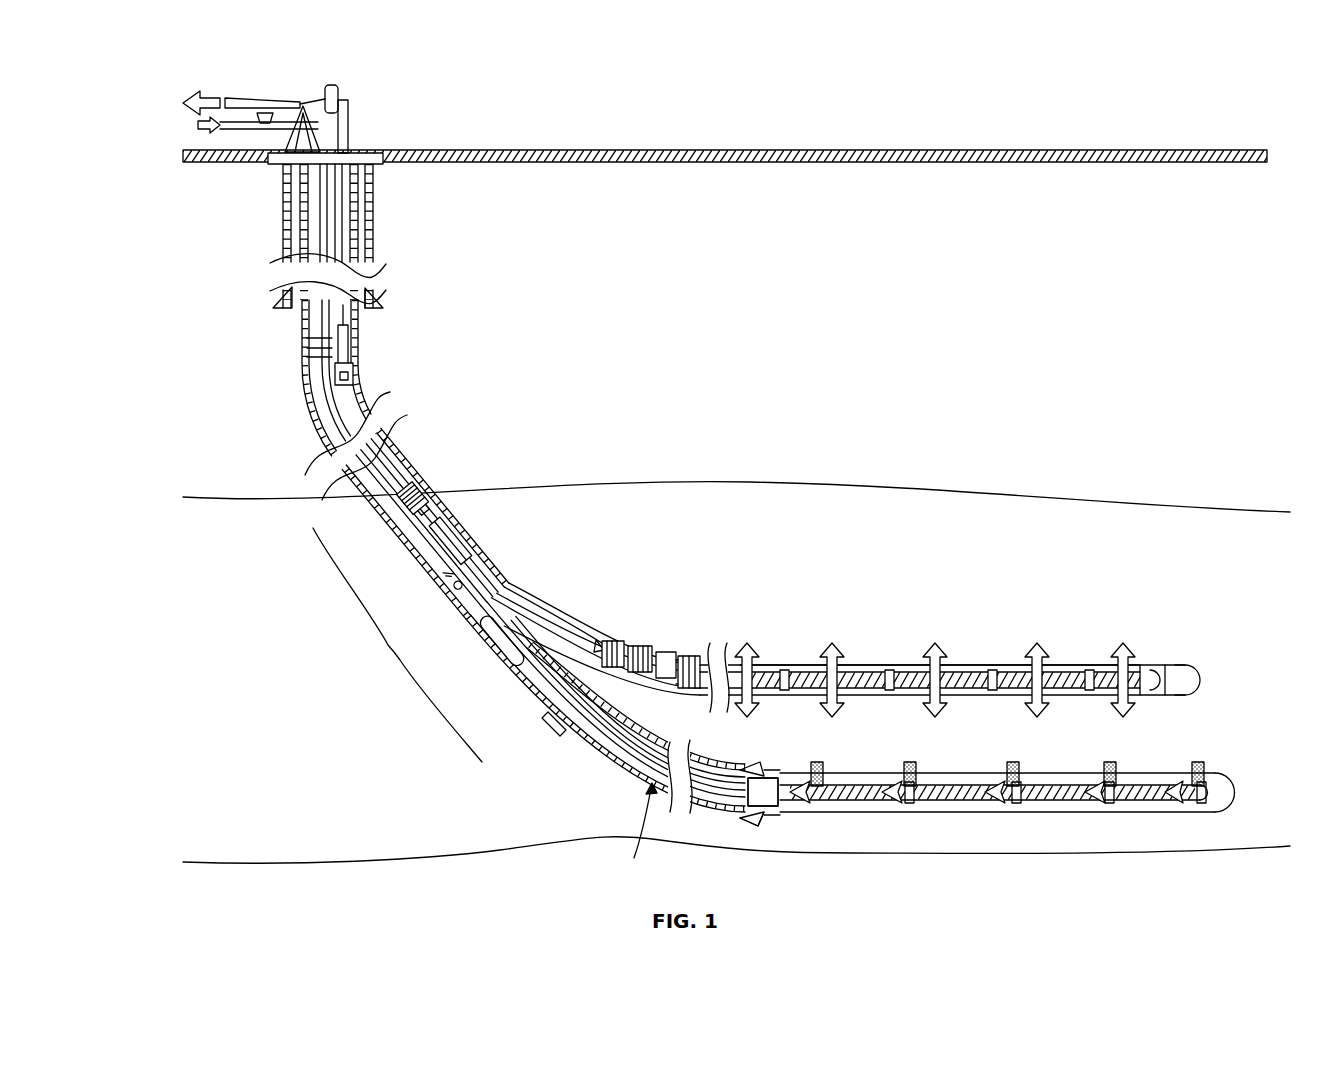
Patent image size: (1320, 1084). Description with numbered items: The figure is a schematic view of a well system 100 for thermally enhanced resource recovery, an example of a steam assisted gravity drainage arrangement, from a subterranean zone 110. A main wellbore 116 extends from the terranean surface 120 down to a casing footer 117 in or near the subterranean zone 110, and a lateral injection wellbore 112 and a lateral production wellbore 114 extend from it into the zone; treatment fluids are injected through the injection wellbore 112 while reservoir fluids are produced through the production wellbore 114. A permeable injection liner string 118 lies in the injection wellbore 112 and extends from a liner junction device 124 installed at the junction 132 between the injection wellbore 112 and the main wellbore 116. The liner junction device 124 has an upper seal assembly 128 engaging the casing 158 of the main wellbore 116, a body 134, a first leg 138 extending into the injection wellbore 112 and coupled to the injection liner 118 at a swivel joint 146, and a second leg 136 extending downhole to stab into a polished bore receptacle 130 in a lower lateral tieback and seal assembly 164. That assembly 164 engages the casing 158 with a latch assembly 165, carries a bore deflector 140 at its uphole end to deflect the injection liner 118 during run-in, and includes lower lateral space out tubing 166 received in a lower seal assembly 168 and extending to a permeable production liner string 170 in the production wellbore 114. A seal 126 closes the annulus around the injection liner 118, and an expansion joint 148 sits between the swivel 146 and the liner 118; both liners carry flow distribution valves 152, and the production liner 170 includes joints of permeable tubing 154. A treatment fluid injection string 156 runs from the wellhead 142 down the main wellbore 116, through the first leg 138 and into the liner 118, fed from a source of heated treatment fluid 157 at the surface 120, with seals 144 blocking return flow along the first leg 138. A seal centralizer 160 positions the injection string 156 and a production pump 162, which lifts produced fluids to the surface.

The well system 100 is at (1100, 131).
The subterranean zone 110 is at (303, 661).
The lateral injection wellbore 112 is at (907, 664).
The lateral production wellbore 114 is at (871, 773).
The main wellbore 116 is at (367, 338).
The casing footer 117 is at (758, 766).
The permeable injection liner string 118 is at (799, 668).
The terranean surface 120 is at (735, 150).
The liner junction device 124 is at (397, 645).
The seal 126 is at (683, 652).
The upper seal assembly 128 is at (417, 472).
The polished bore receptacle 130 is at (557, 726).
The junction 132 is at (511, 599).
The body 134 is at (458, 540).
The second leg 136 is at (507, 675).
The first leg 138 is at (583, 640).
The bore deflector 140 is at (598, 696).
The wellhead 142 is at (372, 150).
The seals 144 is at (634, 650).
The swivel joint 146 is at (693, 655).
The expansion joint 148 is at (712, 665).
The flow distribution valves 152 is at (785, 695).
The permeable tubing 154 is at (962, 665).
The treatment fluid injection string 156 is at (527, 620).
The source of heated treatment fluid 157 is at (197, 127).
The casing 158 is at (308, 407).
The seal centralizer 160 is at (303, 340).
The production pump 162 is at (360, 364).
The lower lateral tieback and seal assembly 164 is at (639, 830).
The latch assembly 165 is at (598, 740).
The lower lateral space out tubing 166 is at (614, 757).
The lower seal assembly 168 is at (742, 826).
The permeable production liner string 170 is at (950, 806).